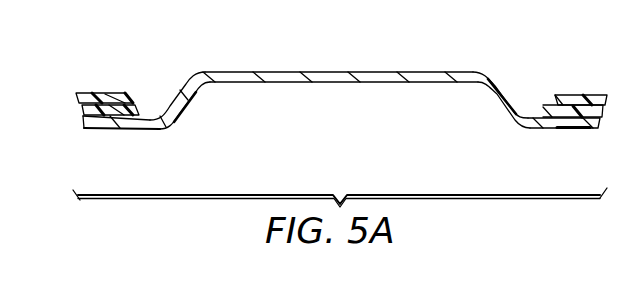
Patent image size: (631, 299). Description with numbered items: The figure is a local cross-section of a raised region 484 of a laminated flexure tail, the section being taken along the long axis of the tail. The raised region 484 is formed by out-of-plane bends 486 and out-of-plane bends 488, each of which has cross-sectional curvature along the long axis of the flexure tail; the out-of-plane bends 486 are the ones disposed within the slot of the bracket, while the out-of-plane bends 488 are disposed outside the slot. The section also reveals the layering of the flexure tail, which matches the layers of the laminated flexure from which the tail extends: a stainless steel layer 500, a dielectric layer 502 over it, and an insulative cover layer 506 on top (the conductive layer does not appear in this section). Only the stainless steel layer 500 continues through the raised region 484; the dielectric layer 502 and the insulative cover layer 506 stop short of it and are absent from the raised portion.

The raised region 484 is at (328, 72).
The out-of-plane bends 488 is at (160, 112).
The out-of-plane bends 486 is at (518, 111).
The insulative cover layer 506 is at (108, 101).
The dielectric layer 502 is at (79, 111).
The stainless steel layer 500 is at (131, 122).